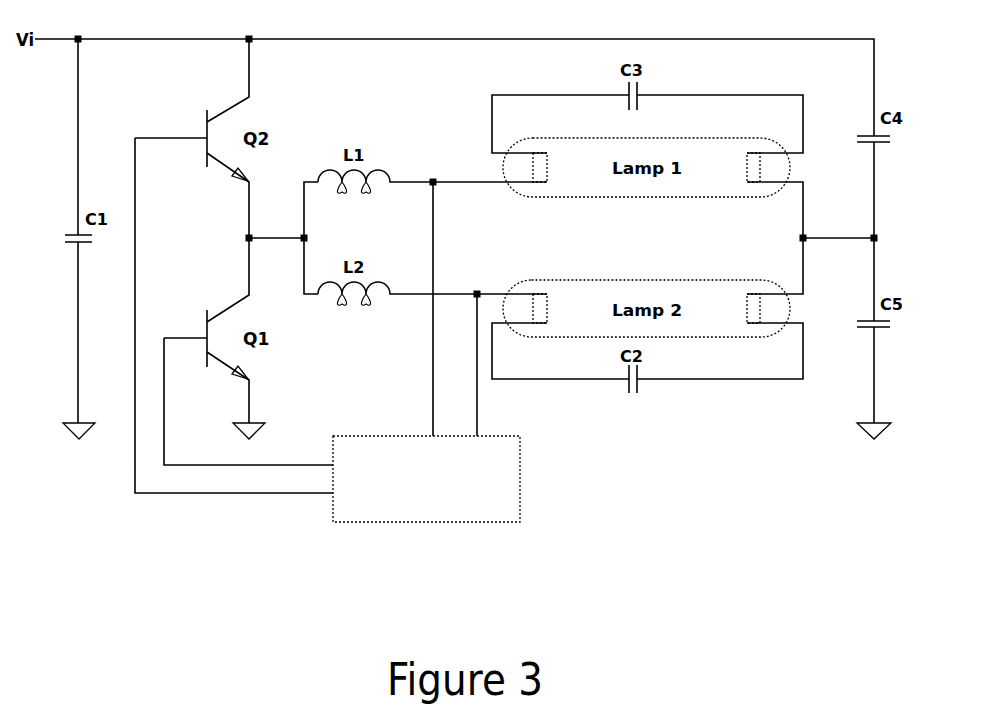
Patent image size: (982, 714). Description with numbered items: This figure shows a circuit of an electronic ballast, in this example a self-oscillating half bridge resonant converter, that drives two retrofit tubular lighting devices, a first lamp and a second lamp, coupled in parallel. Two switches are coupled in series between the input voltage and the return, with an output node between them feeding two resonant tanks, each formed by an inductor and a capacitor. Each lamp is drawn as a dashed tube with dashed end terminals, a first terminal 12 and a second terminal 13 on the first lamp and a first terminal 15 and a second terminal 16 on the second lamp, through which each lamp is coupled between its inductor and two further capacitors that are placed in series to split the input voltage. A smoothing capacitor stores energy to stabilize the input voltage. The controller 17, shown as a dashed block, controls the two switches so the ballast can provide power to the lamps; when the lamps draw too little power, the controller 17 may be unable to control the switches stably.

The first electrode of lamp 1 12 is at (556, 167).
The second electrode of lamp 1 13 is at (738, 167).
The first electrode of lamp 2 15 is at (556, 308).
The second electrode of lamp 2 16 is at (738, 308).
The controller 17 is at (426, 479).